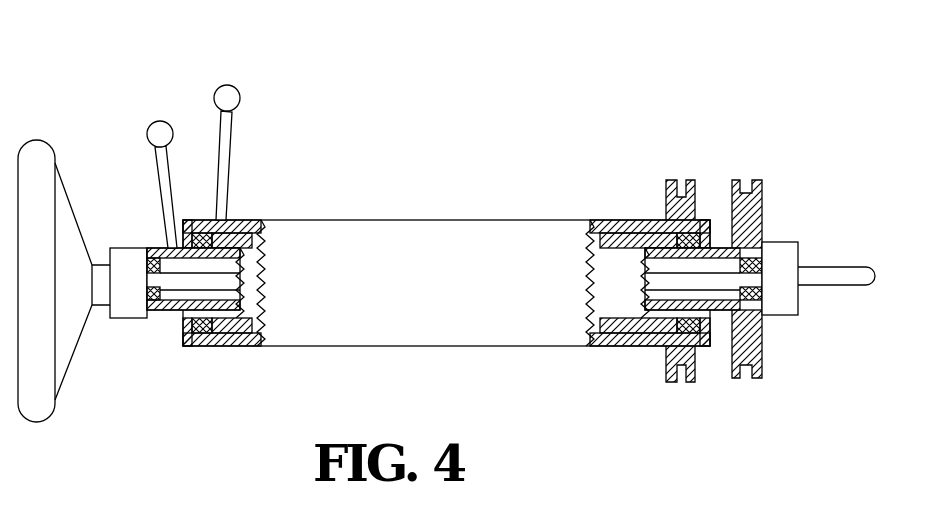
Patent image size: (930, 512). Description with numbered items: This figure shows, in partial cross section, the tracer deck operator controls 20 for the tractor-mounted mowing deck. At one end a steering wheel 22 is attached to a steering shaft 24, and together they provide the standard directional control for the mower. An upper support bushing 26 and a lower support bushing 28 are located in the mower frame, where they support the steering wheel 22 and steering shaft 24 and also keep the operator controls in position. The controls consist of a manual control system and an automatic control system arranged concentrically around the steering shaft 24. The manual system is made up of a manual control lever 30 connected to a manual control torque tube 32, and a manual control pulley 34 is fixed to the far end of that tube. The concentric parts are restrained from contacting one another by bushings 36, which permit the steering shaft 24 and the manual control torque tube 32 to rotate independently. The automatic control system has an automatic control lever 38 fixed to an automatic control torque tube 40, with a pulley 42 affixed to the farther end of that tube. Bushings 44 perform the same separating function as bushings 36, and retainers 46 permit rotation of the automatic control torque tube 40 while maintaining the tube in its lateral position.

The tracer deck operator controls 20 is at (138, 57).
The steering wheel 22 is at (40, 423).
The steering shaft 24 is at (185, 285).
The upper support bushing 26 is at (122, 320).
The lower support bushing 28 is at (806, 318).
The manual control lever 30 is at (153, 121).
The manual control torque tube 32 is at (266, 235).
The manual control pulley 34 is at (753, 180).
The bushings 36 is at (160, 253).
The automatic control lever 38 is at (237, 88).
The automatic control torque tube 40 is at (322, 247).
The pulley 42 is at (672, 180).
The bushings 44 is at (217, 330).
The retainers 46 is at (188, 348).